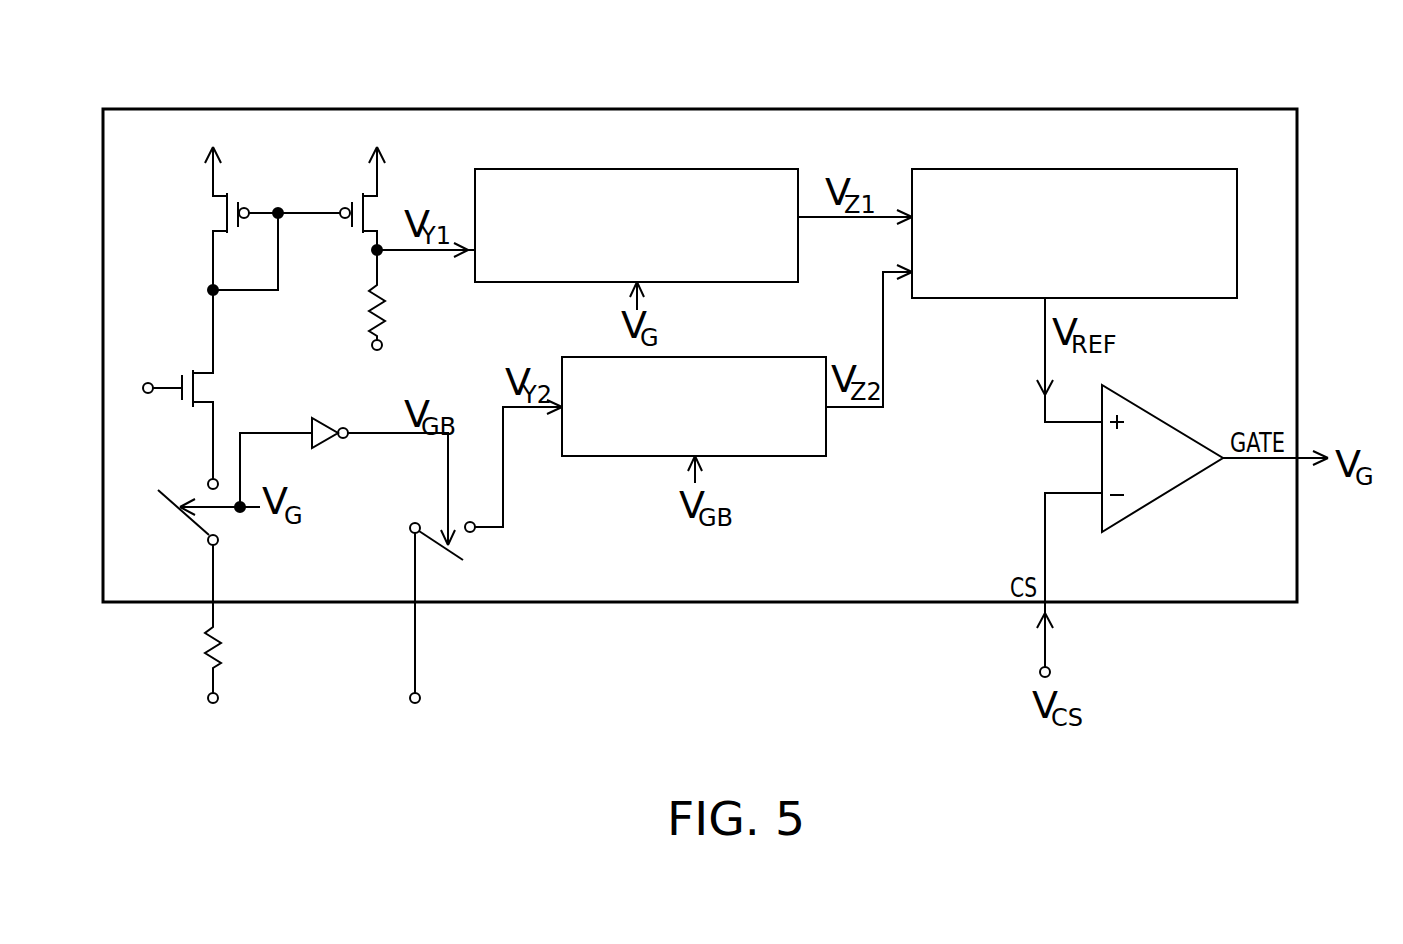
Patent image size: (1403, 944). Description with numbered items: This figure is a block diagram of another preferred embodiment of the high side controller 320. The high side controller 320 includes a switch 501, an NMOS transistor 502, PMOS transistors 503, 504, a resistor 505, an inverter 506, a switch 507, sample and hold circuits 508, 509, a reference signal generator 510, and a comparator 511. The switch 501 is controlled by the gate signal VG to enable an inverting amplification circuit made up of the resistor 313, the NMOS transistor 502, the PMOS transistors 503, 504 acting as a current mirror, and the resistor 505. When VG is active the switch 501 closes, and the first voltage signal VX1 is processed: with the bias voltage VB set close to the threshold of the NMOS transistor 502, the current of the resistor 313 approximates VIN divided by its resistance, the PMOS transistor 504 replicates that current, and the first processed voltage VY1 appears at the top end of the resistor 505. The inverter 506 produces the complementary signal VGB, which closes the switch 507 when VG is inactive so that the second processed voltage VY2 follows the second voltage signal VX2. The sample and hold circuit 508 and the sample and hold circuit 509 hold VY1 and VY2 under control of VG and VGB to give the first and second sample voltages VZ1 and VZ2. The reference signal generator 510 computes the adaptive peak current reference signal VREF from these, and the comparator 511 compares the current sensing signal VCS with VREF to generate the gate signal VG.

The high side controller 320 is at (695, 109).
The resistor 313 is at (218, 645).
The switch 501 is at (200, 495).
The NMOS transistor 502 is at (212, 388).
The PMOS transistor 503 is at (211, 214).
The PMOS transistor 504 is at (375, 208).
The resistor 505 is at (383, 310).
The inverter 506 is at (322, 445).
The switch 507 is at (465, 545).
The sample and hold circuit 508 is at (583, 169).
The sample and hold circuit 509 is at (752, 456).
The reference signal generator 510 is at (1098, 169).
The comparator 511 is at (1160, 416).